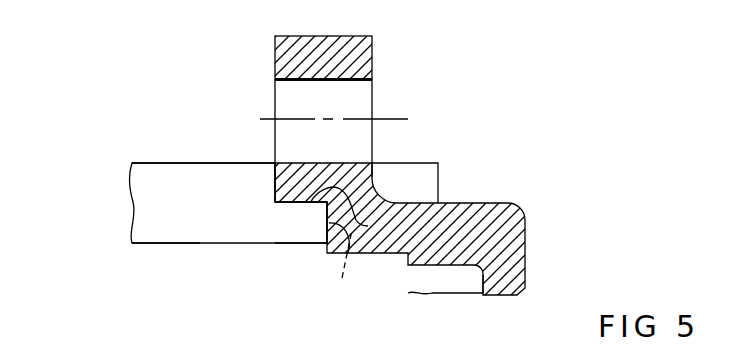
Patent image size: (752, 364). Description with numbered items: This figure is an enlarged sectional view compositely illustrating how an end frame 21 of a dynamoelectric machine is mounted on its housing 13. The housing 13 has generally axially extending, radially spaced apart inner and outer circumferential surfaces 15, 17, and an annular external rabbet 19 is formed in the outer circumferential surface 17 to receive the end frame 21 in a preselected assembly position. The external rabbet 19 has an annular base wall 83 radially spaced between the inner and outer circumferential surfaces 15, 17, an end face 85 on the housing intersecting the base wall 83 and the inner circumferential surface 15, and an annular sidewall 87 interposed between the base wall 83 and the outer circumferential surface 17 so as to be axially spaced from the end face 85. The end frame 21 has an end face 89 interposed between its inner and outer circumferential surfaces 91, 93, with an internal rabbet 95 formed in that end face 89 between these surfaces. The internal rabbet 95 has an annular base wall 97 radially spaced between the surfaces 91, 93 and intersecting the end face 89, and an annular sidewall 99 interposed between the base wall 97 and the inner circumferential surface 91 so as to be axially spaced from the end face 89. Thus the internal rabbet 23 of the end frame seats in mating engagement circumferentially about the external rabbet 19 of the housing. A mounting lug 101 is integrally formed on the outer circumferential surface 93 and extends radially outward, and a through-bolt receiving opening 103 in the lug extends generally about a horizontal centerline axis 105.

The housing 13 is at (140, 199).
The inner circumferential surface 15 is at (137, 243).
The outer circumferential surface 17 is at (146, 163).
The external rabbet 19 is at (214, 255).
The end frame 21 is at (682, 260).
The internal rabbet 23 is at (318, 204).
The base wall 83 is at (290, 216).
The end face 85 is at (327, 239).
The sidewall 87 is at (273, 178).
The end face 89 is at (372, 147).
The inner circumferential surface 91 is at (387, 253).
The outer circumferential surface 93 is at (438, 183).
The internal rabbet 95 is at (182, 150).
The base wall 97 is at (377, 214).
The sidewall 99 is at (335, 265).
The mounting lug 101 is at (287, 22).
The through-bolt receiving opening 103 is at (343, 81).
The horizontal centerline axis 105 is at (394, 119).